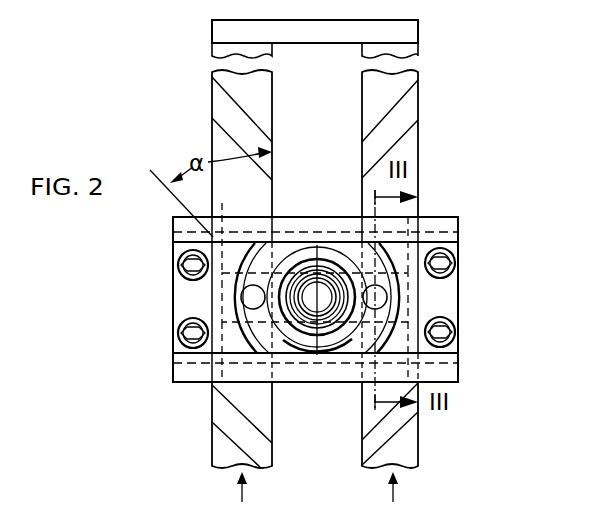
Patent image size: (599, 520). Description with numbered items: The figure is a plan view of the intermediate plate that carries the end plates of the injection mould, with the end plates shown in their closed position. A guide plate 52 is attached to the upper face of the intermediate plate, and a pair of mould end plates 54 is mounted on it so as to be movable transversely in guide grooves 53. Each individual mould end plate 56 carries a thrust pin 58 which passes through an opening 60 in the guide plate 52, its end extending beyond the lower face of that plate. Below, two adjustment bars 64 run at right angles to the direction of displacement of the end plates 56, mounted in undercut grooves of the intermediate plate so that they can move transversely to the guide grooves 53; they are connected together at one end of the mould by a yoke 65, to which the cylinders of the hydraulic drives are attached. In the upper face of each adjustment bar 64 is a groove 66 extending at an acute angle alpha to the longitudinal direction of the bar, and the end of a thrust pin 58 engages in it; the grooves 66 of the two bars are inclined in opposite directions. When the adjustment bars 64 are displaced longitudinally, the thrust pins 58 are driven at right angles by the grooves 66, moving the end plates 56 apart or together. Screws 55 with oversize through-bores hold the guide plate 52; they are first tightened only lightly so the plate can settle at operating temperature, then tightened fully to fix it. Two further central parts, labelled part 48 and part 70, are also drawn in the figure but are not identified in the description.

The inner bearing ring 48 is at (298, 272).
The guide plate 52 is at (445, 305).
The guide groove 53 is at (458, 239).
The mould end plates 54 is at (419, 292).
The screw 55 is at (178, 263).
The mould end plate 56 is at (294, 338).
The thrust pin 58 is at (254, 309).
The opening 60 is at (312, 279).
The adjustment bar 64 is at (212, 135).
The yoke 65 is at (412, 33).
The groove 66 is at (222, 103).
The shaft 70 is at (314, 284).